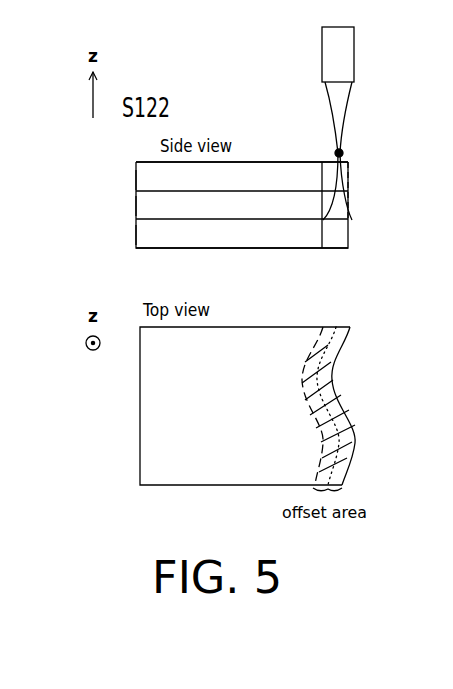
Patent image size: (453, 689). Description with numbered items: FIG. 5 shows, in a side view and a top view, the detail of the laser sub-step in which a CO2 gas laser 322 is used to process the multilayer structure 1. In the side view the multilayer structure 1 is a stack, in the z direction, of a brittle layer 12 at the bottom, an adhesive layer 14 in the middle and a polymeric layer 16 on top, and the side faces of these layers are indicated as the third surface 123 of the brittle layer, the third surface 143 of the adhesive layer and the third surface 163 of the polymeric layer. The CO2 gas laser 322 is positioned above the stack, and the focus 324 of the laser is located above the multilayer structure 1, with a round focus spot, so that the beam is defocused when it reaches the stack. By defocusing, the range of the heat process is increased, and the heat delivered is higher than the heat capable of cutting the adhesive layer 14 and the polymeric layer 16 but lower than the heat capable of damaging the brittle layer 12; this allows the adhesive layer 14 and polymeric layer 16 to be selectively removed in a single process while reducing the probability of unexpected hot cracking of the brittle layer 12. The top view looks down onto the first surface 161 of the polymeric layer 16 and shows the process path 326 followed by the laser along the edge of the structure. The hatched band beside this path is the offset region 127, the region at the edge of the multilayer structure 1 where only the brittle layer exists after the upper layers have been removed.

The multilayer structure 1 is at (46, 143).
The brittle layer 12 is at (136, 246).
The adhesive layer 14 is at (136, 215).
The polymeric layer 16 is at (154, 167).
The third surface 123 is at (135, 236).
The third surface 143 is at (135, 207).
The third surface 163 is at (135, 177).
The first surface 161 is at (205, 416).
The offset region 127 is at (323, 455).
The CO2 gas laser 322 is at (348, 50).
The focus 324 is at (343, 153).
The process path 326 is at (348, 416).